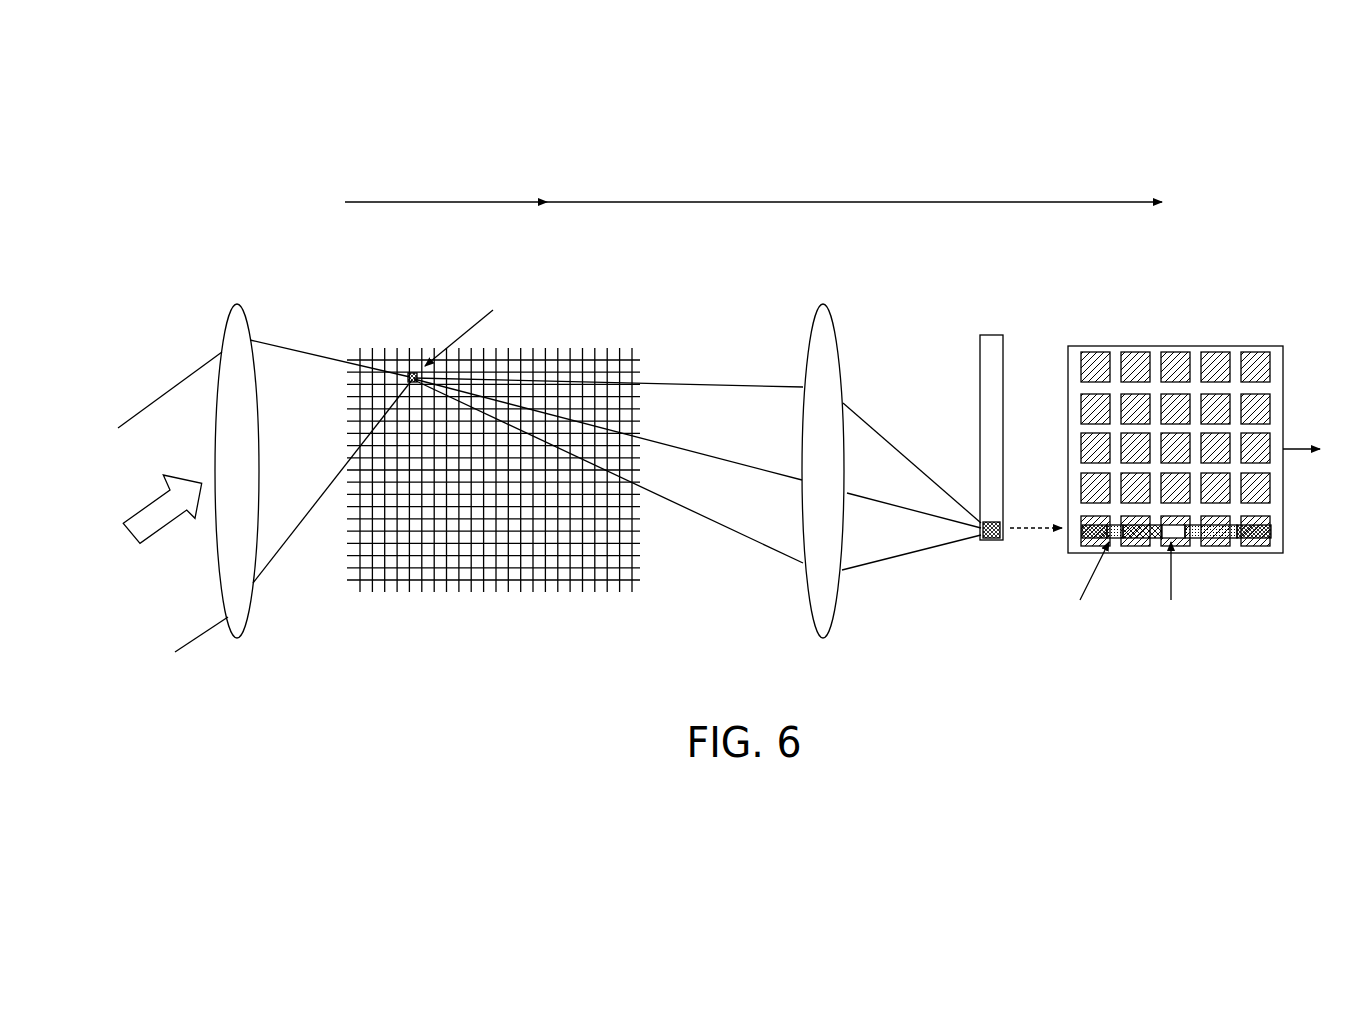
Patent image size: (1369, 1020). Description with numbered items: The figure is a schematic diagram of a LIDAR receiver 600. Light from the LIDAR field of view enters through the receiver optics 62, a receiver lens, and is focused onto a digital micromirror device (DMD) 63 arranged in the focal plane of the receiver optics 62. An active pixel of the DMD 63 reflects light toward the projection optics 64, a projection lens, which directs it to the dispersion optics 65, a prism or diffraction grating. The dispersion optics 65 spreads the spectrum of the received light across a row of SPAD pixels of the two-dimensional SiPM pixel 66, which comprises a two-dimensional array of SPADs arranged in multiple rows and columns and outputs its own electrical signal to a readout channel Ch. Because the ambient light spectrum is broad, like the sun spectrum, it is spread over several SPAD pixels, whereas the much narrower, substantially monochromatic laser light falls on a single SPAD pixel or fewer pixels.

The LIDAR receiver 600 is at (124, 147).
The receiver optics 62 is at (237, 305).
The digital micromirror device (DMD) 63 is at (378, 355).
The projection optics 64 is at (823, 305).
The dispersion optics 65 is at (990, 335).
The 2D SiPM pixel 66 is at (1175, 328).